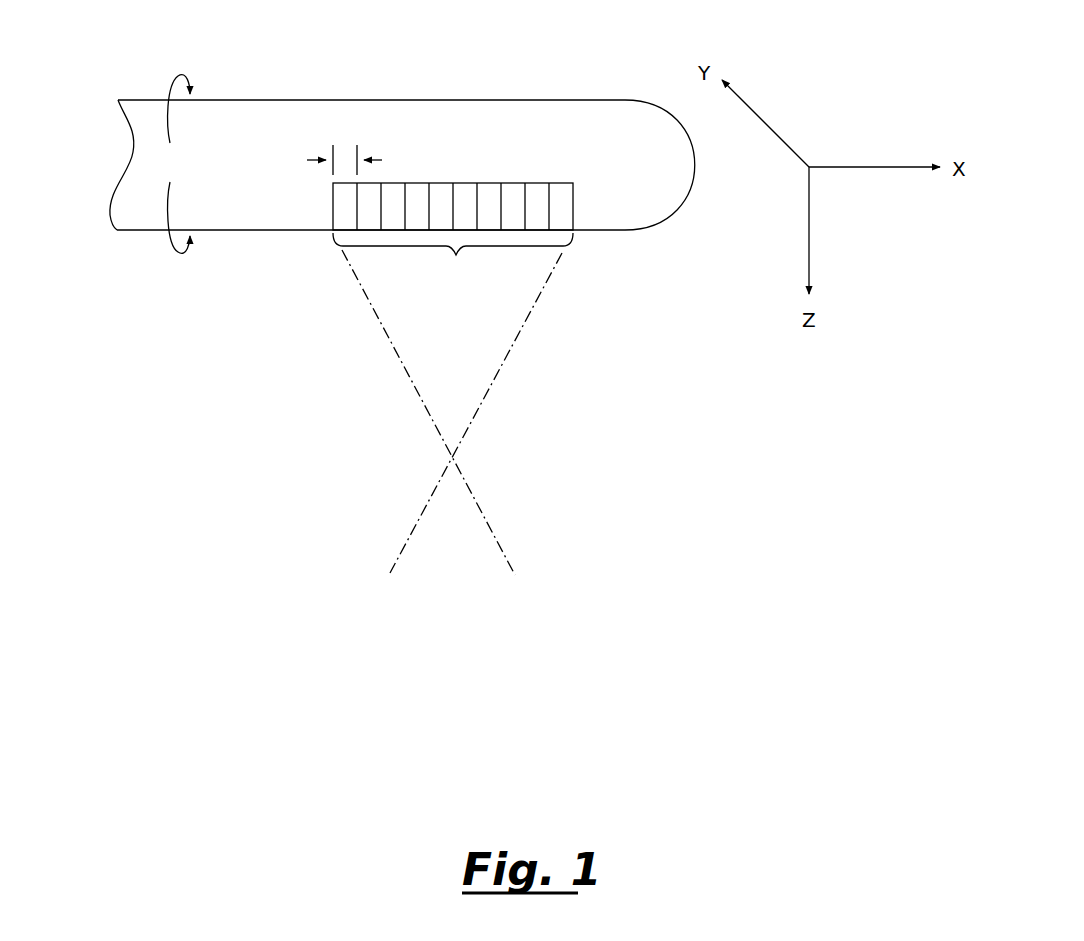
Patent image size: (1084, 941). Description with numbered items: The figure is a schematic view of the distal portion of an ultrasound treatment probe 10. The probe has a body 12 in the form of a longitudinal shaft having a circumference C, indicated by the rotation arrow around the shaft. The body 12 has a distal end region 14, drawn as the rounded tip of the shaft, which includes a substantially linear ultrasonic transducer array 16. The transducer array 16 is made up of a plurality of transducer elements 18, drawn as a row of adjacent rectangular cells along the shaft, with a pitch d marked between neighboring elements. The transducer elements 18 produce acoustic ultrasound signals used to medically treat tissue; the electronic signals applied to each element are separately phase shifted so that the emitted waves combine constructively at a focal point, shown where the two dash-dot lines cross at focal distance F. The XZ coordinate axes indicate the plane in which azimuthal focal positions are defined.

The ultrasound treatment probe 10 is at (106, 60).
The body 12 is at (256, 116).
The distal end region 14 is at (620, 100).
The ultrasonic transducer array 16 is at (582, 211).
The transducer elements 18 is at (453, 262).